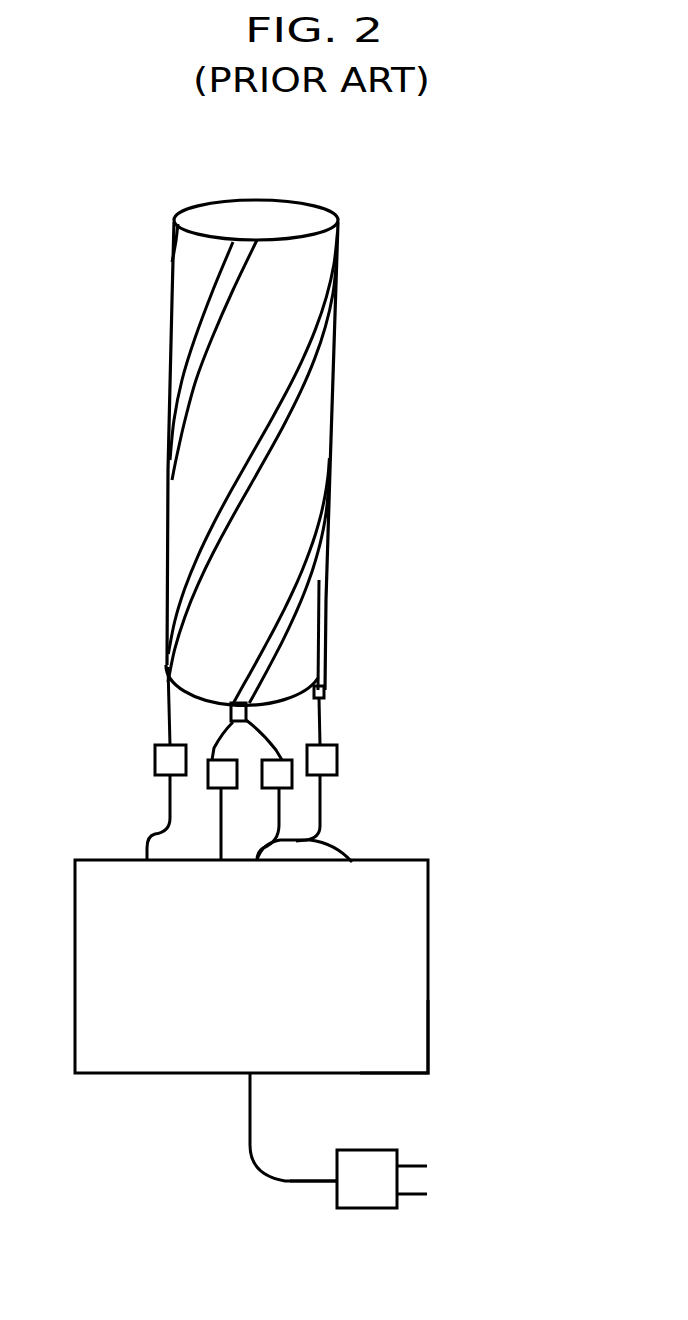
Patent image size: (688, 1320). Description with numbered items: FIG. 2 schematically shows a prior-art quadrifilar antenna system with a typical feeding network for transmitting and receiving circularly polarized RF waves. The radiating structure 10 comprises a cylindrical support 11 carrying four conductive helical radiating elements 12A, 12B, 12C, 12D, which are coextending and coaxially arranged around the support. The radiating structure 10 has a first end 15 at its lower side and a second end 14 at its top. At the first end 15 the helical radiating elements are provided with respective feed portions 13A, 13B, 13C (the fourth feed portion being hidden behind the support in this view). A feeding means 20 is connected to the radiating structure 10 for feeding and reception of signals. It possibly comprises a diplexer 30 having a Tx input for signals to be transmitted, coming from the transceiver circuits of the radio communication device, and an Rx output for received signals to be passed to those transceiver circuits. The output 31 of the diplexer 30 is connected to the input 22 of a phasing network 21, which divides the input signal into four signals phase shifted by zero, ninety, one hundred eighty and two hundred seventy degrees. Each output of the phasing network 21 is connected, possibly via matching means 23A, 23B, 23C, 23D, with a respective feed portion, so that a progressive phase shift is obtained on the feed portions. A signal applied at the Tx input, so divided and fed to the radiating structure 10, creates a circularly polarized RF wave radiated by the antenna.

The radiating structure 10 is at (258, 444).
The support 11 is at (334, 357).
The helical radiating element 12A is at (192, 567).
The helical radiating element 12B is at (282, 622).
The helical radiating element 12C is at (171, 221).
The helical radiating element 12D is at (179, 391).
The feed portion 13A is at (167, 679).
The feed portion 13B is at (220, 703).
The feed portion 13C is at (322, 697).
The second end 14 is at (313, 208).
The first end 15 is at (310, 698).
The feeding means 20 is at (316, 928).
The phasing network 21 is at (370, 1072).
The input 22 is at (244, 1076).
The matching means 23A is at (155, 758).
The matching means 23B is at (208, 788).
The matching means 23C is at (337, 758).
The matching means 23D is at (293, 787).
The diplexer 30 is at (405, 1195).
The output 31 is at (313, 1204).